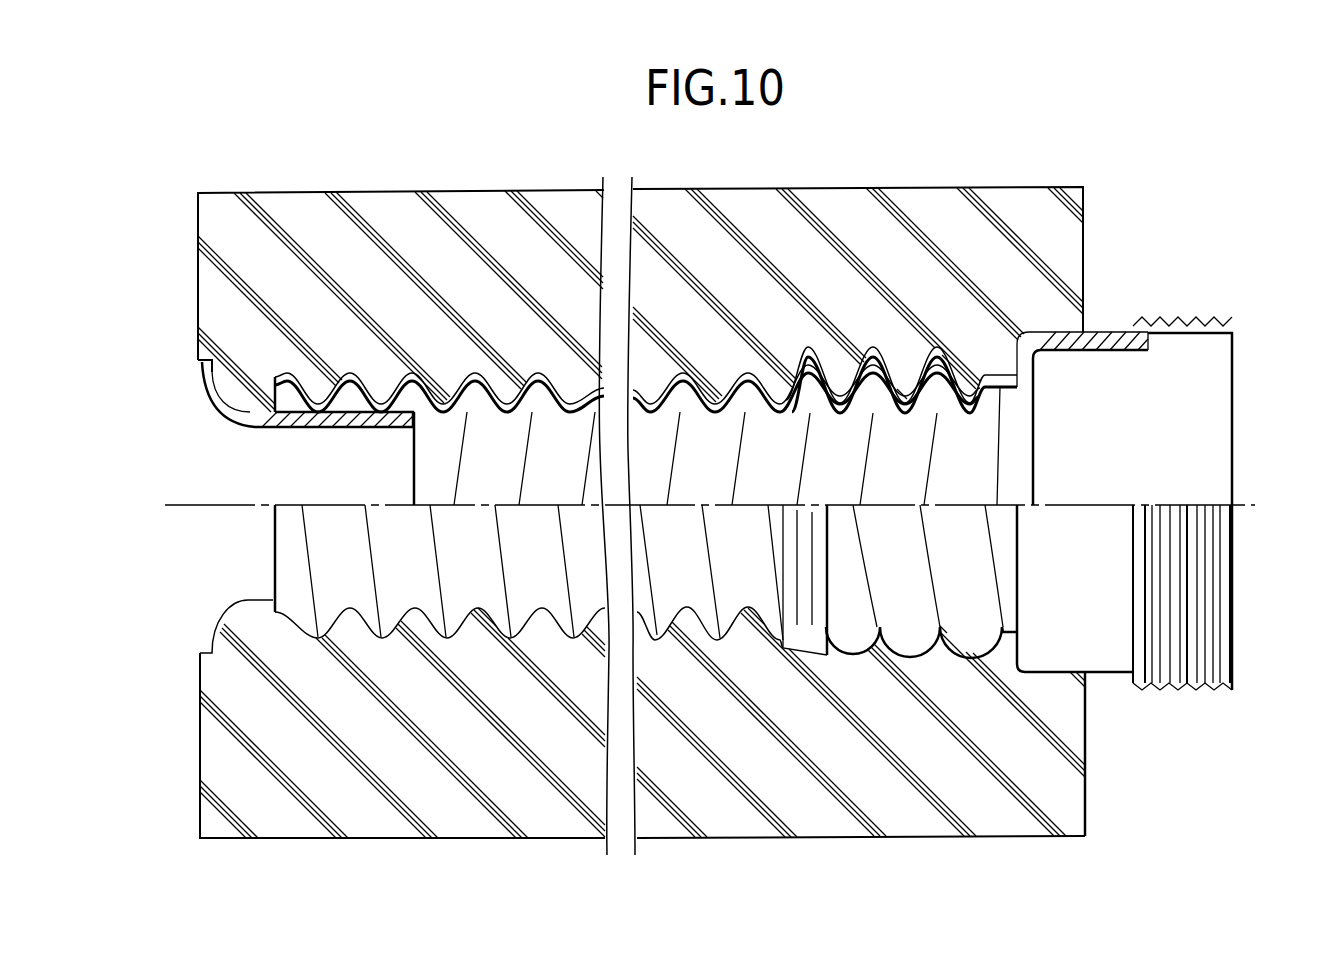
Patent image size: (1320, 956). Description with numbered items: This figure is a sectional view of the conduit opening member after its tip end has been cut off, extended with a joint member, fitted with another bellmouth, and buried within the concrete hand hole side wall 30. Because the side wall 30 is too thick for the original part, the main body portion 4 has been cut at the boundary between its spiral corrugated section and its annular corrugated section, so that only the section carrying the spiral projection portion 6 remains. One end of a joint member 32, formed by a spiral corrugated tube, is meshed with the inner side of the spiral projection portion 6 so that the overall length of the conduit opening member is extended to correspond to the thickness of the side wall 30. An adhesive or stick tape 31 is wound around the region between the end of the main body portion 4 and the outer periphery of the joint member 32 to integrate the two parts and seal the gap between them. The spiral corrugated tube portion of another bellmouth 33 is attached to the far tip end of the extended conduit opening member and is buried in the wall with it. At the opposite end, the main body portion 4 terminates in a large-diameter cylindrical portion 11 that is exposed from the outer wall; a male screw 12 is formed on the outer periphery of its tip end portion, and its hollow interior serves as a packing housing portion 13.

The main body portion 4 is at (966, 347).
The spiral projection portion 6 is at (877, 352).
The large-diameter cylindrical portion 11 is at (1111, 338).
The male screw 12 is at (1178, 326).
The packing housing portion 13 is at (1212, 371).
The hand hole side wall 30 is at (1068, 233).
The adhesive or stick tape 31 is at (800, 352).
The joint member 32 is at (648, 401).
The bellmouth 33 is at (213, 385).